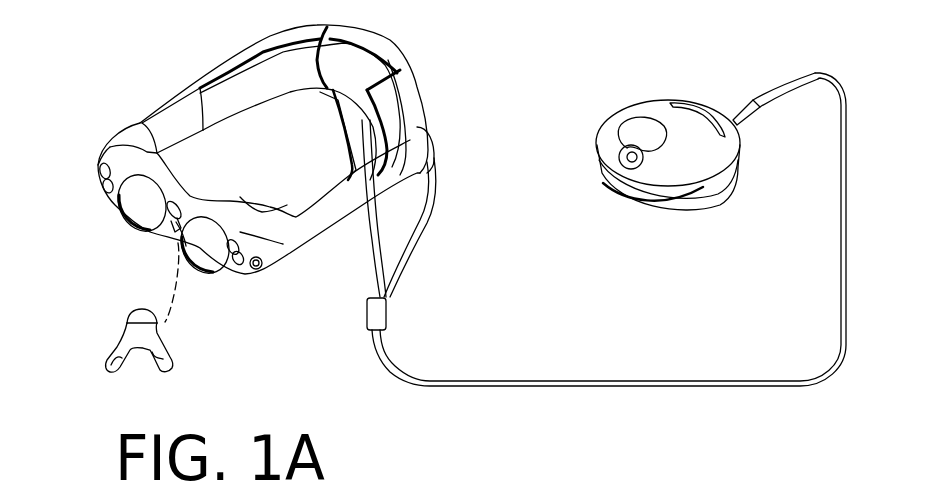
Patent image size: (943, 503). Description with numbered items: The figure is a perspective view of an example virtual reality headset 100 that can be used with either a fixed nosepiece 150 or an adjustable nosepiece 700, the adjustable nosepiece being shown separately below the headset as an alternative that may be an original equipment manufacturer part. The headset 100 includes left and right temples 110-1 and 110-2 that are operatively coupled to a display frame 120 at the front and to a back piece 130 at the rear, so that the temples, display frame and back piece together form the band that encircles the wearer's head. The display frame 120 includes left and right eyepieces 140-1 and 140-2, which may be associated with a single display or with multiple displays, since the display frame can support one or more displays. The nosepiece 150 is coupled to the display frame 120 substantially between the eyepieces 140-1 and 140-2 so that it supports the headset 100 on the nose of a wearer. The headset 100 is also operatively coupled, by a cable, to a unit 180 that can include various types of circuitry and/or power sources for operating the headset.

The virtual reality headset 100 is at (188, 63).
The left temple 110-1 is at (273, 247).
The right temple 110-2 is at (153, 112).
The display frame 120 is at (200, 210).
The back piece 130 is at (362, 60).
The left eyepiece 140-1 is at (210, 253).
The right eyepiece 140-2 is at (130, 197).
The fixed nosepiece 150 is at (177, 230).
The unit 180 is at (592, 85).
The adjustable nosepiece 700 is at (111, 313).